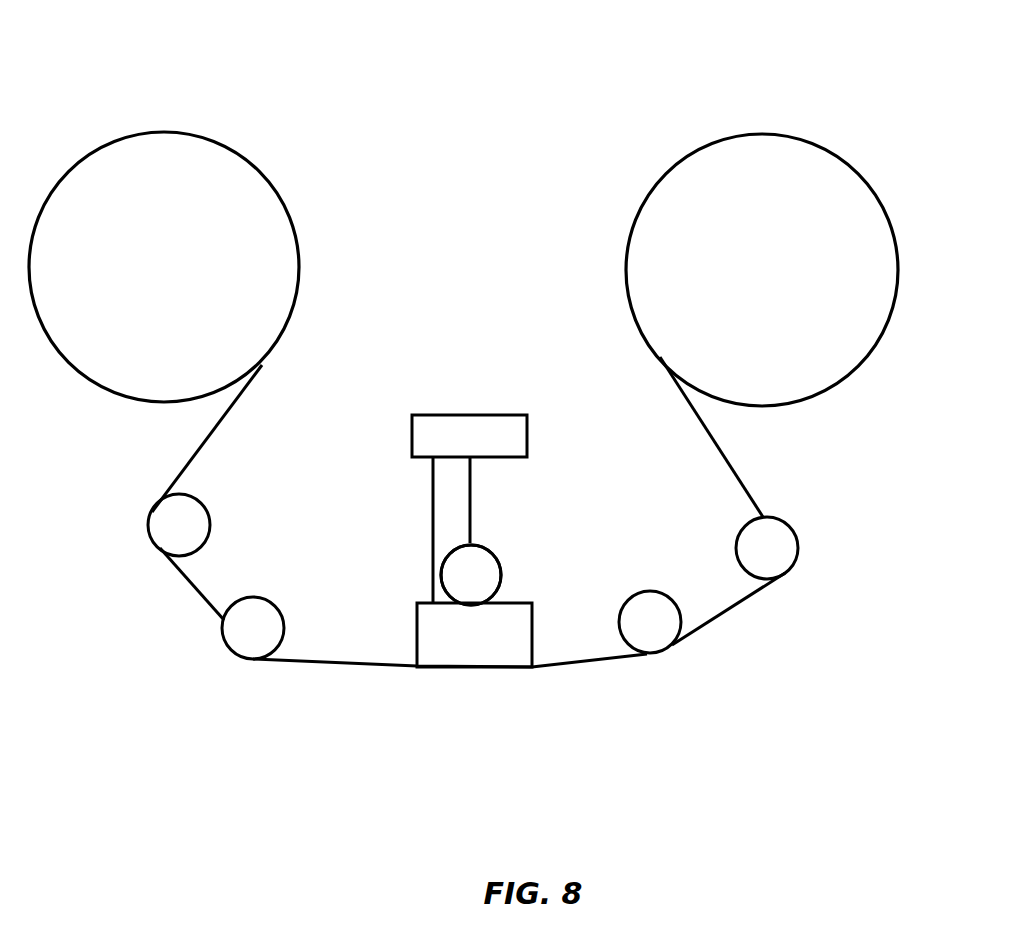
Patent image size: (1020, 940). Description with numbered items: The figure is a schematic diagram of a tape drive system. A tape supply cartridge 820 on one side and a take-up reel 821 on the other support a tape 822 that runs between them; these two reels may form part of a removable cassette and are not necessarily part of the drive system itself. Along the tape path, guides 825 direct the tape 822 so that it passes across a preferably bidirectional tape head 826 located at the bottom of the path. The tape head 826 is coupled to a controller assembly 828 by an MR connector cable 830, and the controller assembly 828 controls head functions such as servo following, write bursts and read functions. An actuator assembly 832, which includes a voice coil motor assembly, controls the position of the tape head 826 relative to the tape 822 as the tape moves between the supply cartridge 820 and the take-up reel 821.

The tape supply cartridge 820 is at (161, 131).
The take-up reel 821 is at (760, 134).
The tape 822 is at (342, 664).
The guides 825 is at (211, 514).
The tape head 826 is at (533, 633).
The controller assembly 828 is at (466, 415).
The MR connector cable 830 is at (435, 573).
The actuator assembly 832 is at (495, 552).